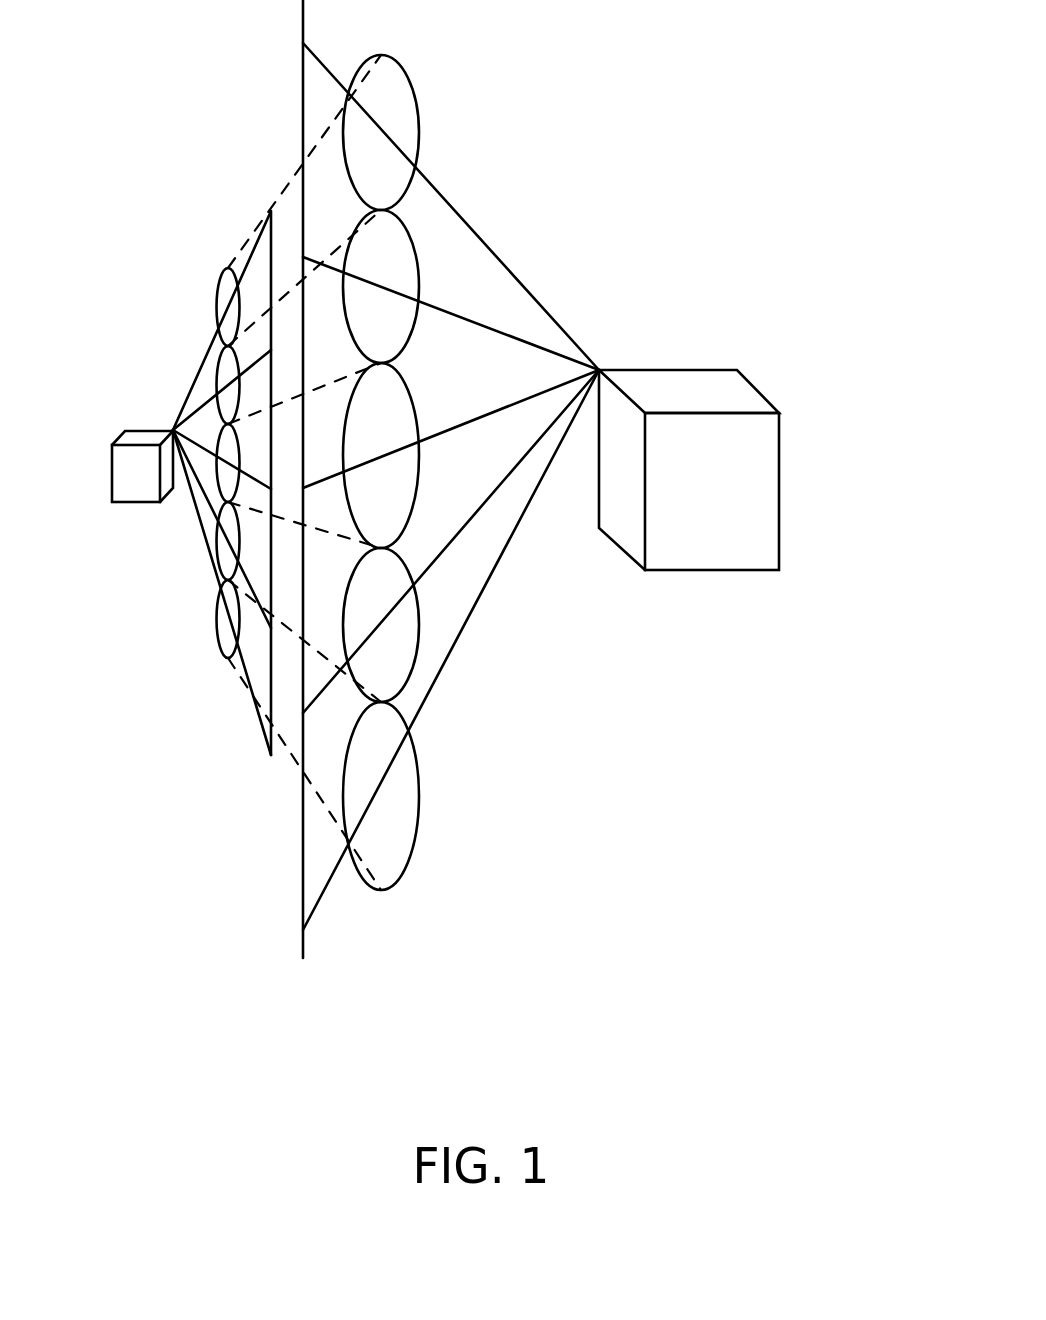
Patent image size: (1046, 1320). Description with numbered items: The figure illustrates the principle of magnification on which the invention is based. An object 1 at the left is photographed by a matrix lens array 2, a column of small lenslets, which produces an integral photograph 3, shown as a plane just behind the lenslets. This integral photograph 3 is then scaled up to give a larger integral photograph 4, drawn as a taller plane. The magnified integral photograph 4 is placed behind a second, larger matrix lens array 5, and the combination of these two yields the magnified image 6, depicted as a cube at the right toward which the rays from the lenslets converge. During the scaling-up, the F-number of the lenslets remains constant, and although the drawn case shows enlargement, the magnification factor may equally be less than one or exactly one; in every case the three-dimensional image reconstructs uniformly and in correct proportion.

The object 1 is at (110, 473).
The matrix lens array 2 is at (190, 640).
The integral photograph 3 is at (231, 726).
The integral photograph 4 is at (253, 897).
The matrix lens array 5 is at (446, 888).
The magnified image 6 is at (789, 527).